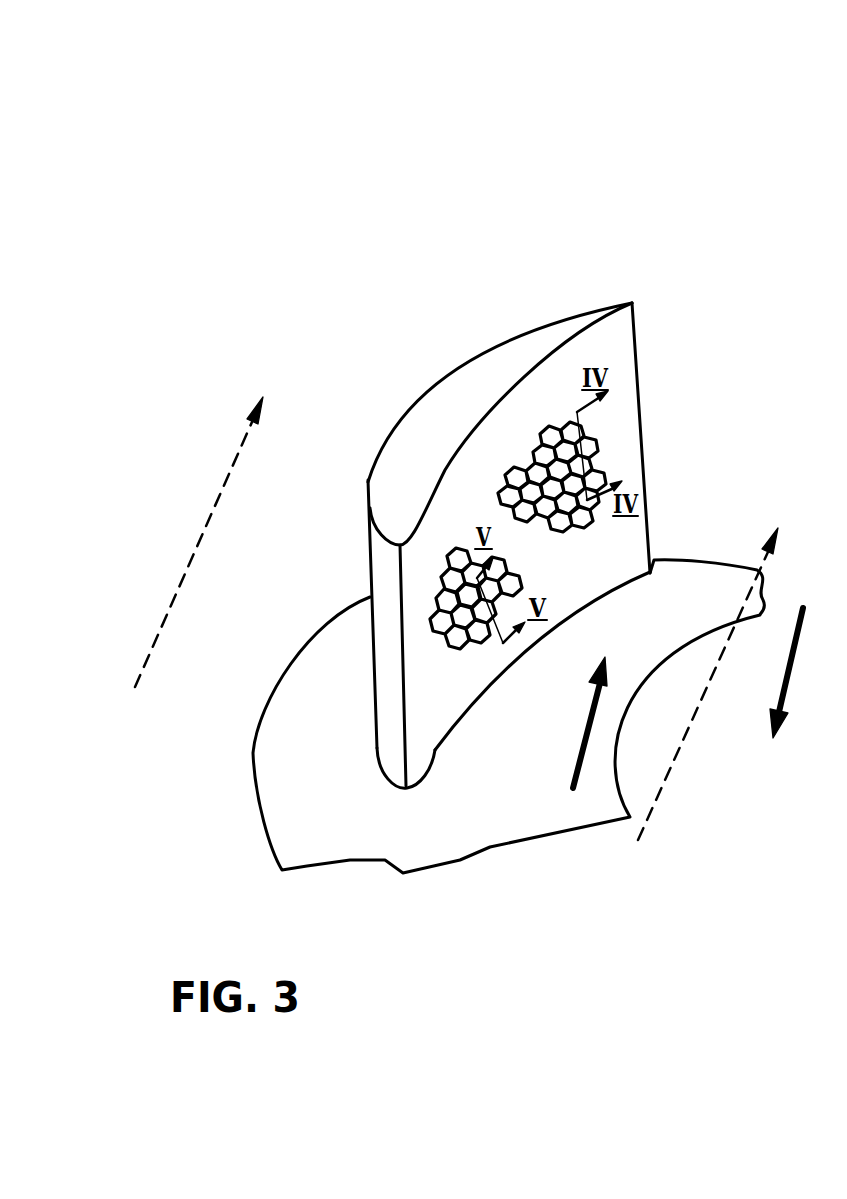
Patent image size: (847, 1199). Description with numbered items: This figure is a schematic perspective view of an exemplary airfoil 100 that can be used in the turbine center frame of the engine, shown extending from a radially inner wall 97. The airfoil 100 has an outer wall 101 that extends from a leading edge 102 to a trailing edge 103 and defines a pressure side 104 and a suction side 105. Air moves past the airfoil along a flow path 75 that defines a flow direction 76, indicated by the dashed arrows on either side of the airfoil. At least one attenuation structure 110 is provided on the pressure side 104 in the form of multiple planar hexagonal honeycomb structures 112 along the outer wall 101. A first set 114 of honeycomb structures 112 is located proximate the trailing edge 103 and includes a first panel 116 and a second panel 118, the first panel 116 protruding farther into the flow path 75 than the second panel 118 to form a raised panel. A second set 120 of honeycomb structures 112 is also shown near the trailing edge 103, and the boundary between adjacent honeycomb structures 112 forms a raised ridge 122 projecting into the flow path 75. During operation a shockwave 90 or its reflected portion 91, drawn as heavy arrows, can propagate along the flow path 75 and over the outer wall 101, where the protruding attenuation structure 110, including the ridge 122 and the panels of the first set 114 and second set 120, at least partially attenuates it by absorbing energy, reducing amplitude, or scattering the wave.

The flow path 75 is at (275, 554).
The flow direction 76 is at (163, 627).
The shockwave 90 is at (583, 738).
The reflected portion 91 is at (797, 653).
The radially inner wall 97 is at (523, 828).
The airfoil 100 is at (587, 403).
The outer wall 101 is at (579, 322).
The leading edge 102 is at (391, 698).
The trailing edge 103 is at (642, 402).
The pressure side 104 is at (425, 753).
The suction side 105 is at (392, 752).
The attenuation structure 110 is at (527, 464).
The honeycomb structures 112 is at (560, 464).
The first set of honeycomb structures 114 is at (560, 467).
The first panel 116 is at (533, 467).
The second panel 118 is at (569, 549).
The second set of honeycomb structures 120 is at (465, 660).
The ridge 122 is at (423, 585).